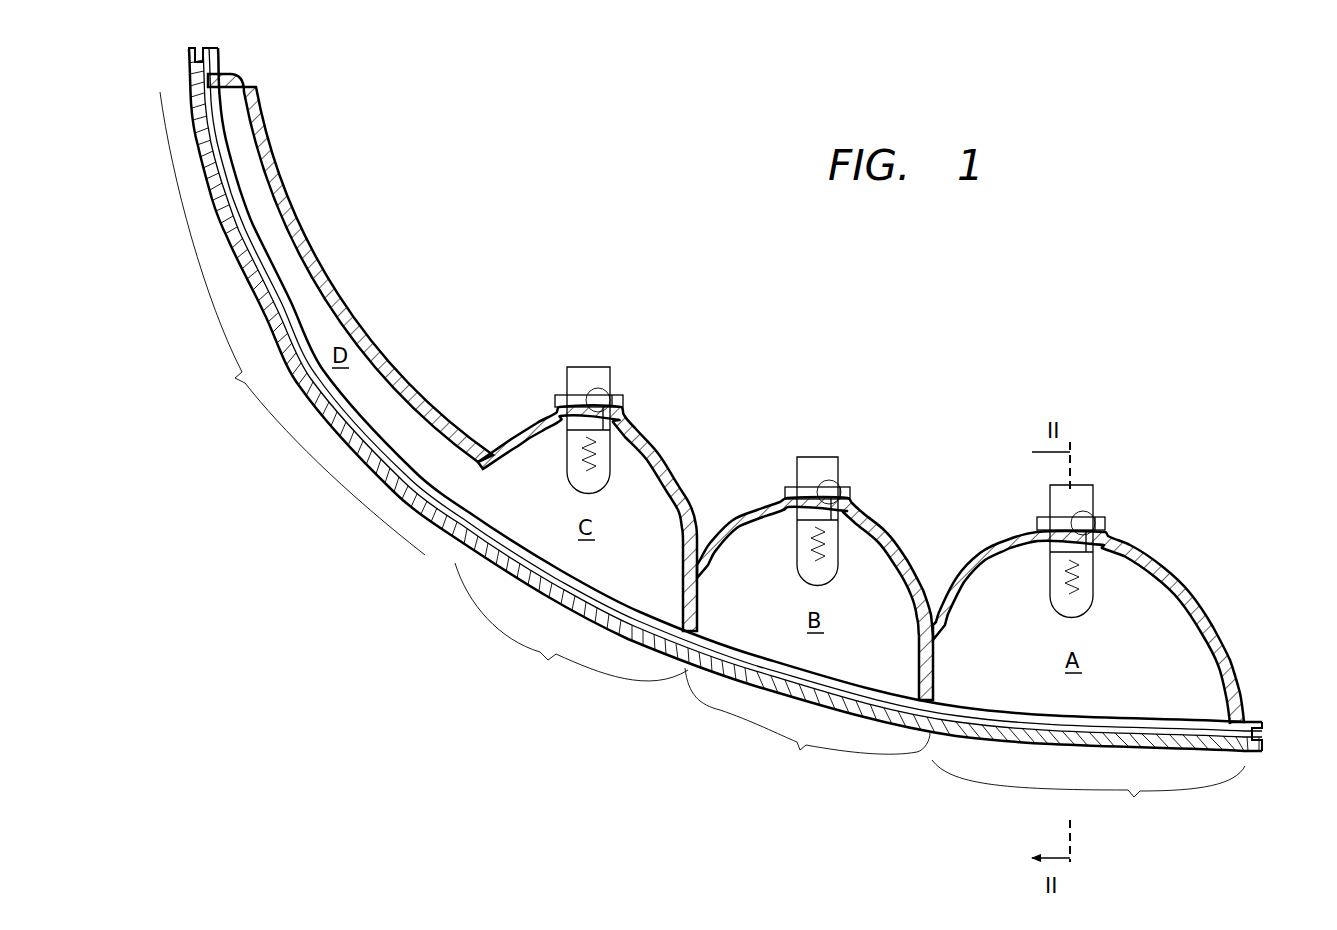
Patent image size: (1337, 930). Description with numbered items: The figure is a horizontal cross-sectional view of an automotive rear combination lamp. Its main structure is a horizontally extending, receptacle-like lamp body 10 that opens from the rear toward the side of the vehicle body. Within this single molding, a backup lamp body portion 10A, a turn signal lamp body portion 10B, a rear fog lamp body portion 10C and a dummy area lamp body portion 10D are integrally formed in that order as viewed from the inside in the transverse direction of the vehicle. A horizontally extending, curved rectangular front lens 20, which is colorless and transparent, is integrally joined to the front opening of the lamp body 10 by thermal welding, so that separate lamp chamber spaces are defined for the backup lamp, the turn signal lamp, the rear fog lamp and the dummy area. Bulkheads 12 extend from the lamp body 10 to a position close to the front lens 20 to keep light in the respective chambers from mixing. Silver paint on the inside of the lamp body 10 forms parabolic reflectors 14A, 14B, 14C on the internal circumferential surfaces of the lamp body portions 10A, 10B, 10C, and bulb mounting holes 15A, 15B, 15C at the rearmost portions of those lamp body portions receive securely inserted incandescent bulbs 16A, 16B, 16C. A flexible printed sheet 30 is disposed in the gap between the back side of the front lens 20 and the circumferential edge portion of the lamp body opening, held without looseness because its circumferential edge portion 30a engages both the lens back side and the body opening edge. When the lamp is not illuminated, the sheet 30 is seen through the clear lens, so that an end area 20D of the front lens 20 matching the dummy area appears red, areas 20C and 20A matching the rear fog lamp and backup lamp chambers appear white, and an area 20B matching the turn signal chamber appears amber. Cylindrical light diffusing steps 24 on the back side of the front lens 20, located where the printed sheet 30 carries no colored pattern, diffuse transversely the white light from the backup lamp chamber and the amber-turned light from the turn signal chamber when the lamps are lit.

The lamp body 10 is at (741, 399).
The backup lamp body portion 10A is at (1182, 585).
The turn signal lamp body portion 10B is at (775, 508).
The rear fog lamp body portion 10C is at (530, 420).
The dummy area lamp body portion 10D is at (323, 268).
The bulkheads 12 is at (687, 662).
The parabolic reflector 14A is at (1143, 572).
The parabolic reflector 14B is at (880, 545).
The parabolic reflector 14C is at (637, 450).
The bulb mounting hole 15A is at (1092, 515).
The bulb mounting hole 15B is at (838, 486).
The bulb mounting hole 15C is at (606, 392).
The incandescent bulb 16A is at (1093, 606).
The incandescent bulb 16B is at (838, 582).
The incandescent bulb 16C is at (605, 492).
The front lens 20 is at (990, 745).
The front lens area 20A is at (1088, 792).
The front lens area 20B is at (807, 721).
The front lens area 20C is at (571, 624).
The front lens area 20D is at (292, 323).
The cylindrical steps 24 is at (752, 658).
The flexible printed sheet 30 is at (706, 442).
The circumferential edge portion 30a is at (182, 80).